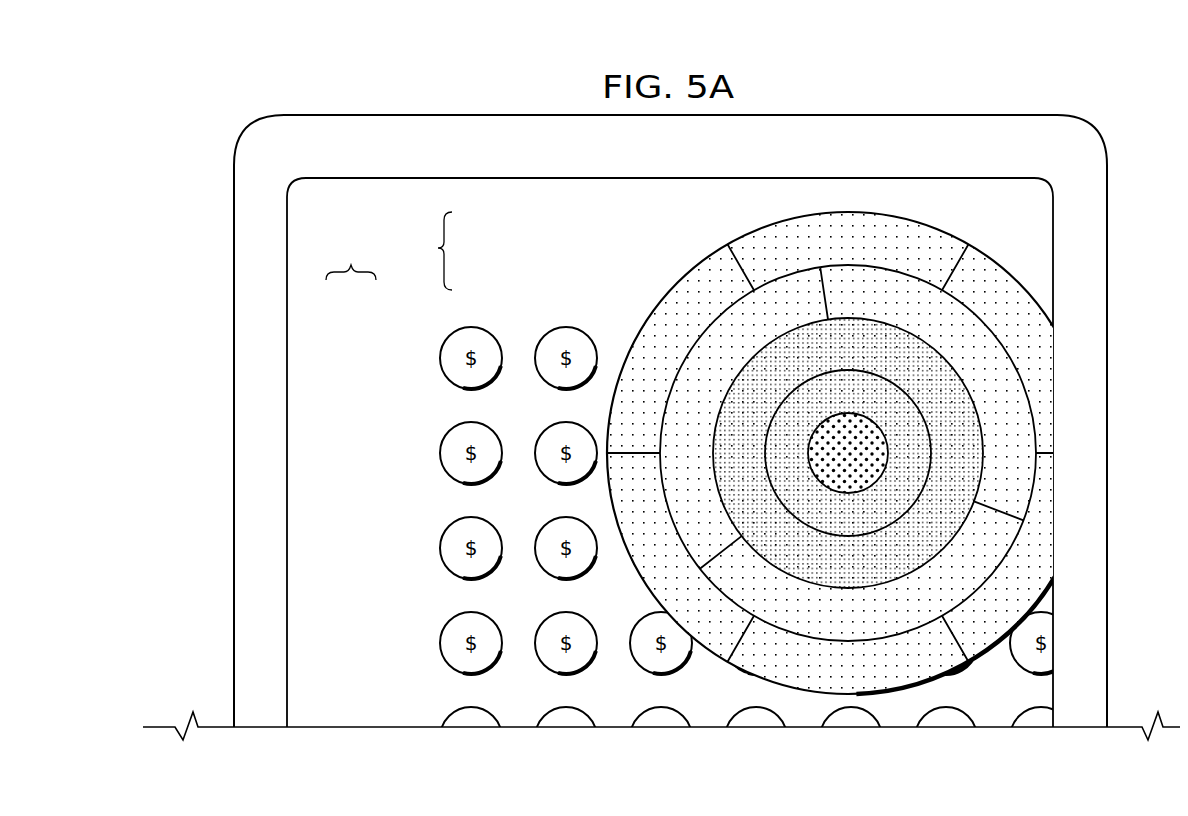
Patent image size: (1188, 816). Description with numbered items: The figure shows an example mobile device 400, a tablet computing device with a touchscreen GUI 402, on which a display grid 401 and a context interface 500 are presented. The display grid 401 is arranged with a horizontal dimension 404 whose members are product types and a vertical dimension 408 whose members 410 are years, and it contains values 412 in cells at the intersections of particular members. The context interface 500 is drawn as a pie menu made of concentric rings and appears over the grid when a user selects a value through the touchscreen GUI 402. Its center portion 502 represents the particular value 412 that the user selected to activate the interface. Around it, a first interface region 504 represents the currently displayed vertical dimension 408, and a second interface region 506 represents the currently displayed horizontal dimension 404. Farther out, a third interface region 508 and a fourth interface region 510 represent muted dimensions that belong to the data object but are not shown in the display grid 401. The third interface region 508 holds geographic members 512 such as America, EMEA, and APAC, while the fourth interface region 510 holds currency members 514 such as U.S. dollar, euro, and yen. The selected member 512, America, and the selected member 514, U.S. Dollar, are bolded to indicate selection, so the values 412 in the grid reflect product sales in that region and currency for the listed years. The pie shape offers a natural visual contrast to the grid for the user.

The mobile device 400 is at (899, 88).
The display grid 401 is at (694, 478).
The touchscreen GUI 402 is at (672, 177).
The horizontal dimension 404 is at (468, 251).
The vertical dimension 408 is at (351, 271).
The members 410 is at (360, 382).
The values 412 is at (447, 338).
The context interface 500 is at (840, 455).
The center portion 502 is at (893, 457).
The first interface region 504 is at (898, 480).
The second interface region 506 is at (872, 389).
The third interface region 508 is at (848, 452).
The fourth interface region 510 is at (981, 664).
The members 512 is at (773, 288).
The members 514 is at (647, 332).